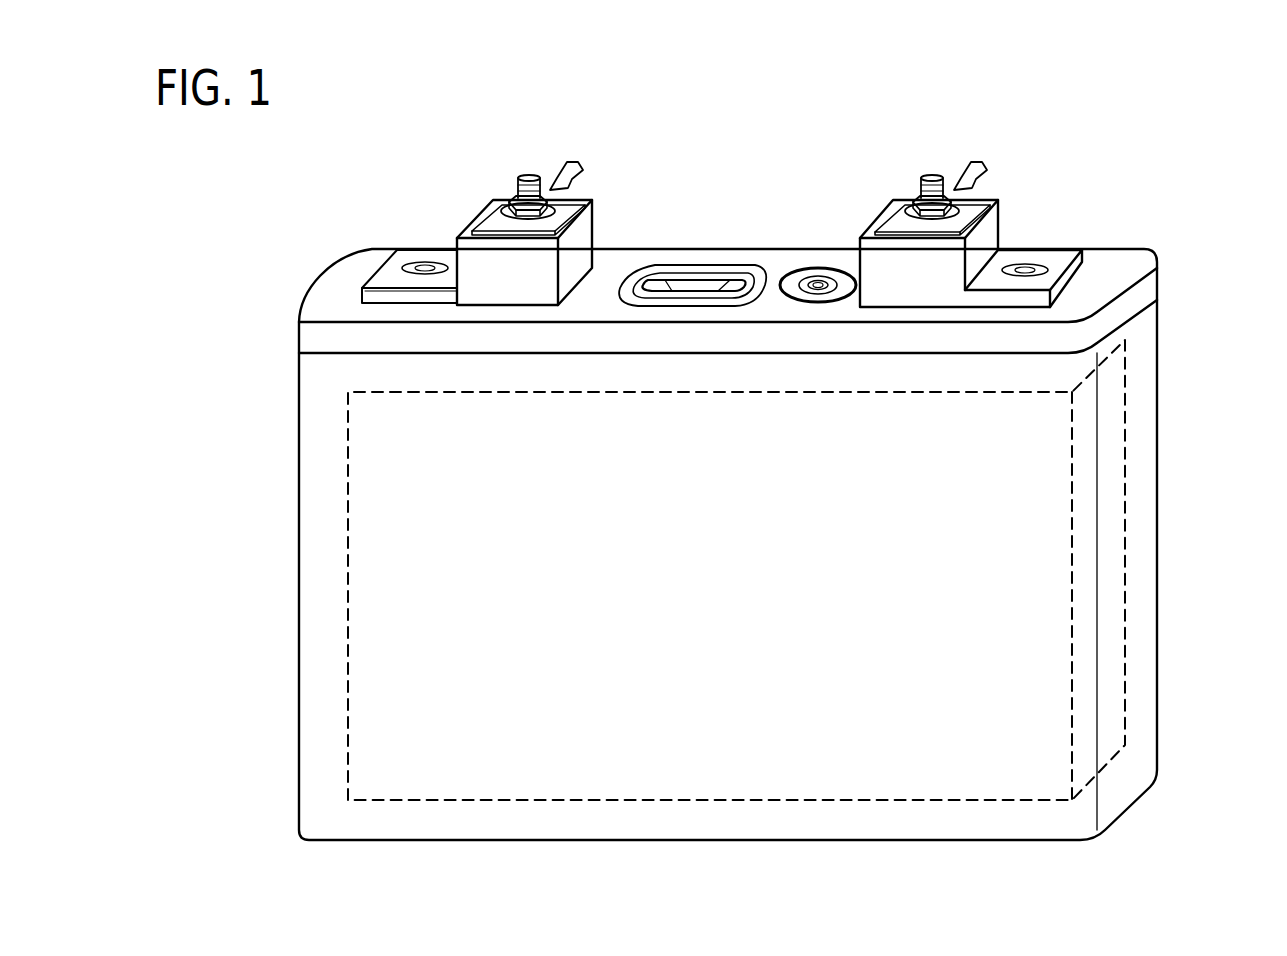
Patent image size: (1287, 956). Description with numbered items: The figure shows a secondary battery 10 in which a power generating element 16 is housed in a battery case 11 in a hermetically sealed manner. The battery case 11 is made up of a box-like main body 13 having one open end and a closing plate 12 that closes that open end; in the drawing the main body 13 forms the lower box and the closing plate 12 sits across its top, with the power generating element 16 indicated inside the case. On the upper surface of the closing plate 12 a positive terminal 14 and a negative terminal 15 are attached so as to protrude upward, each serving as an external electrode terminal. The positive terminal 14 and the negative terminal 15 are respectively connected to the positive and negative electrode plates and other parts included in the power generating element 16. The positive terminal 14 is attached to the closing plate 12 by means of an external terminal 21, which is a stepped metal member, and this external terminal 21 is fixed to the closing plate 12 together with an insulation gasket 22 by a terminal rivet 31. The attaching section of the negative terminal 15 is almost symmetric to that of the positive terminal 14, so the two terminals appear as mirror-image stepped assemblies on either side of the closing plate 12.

The secondary battery 10 is at (755, 148).
The battery case 11 is at (1243, 257).
The closing plate 12 is at (1147, 290).
The main body 13 is at (1147, 332).
The positive terminal 14 is at (527, 178).
The negative terminal 15 is at (933, 178).
The power generating element 16 is at (714, 614).
The external terminal 21 is at (447, 262).
The insulation gasket 22 is at (375, 302).
The terminal rivet 31 is at (414, 270).